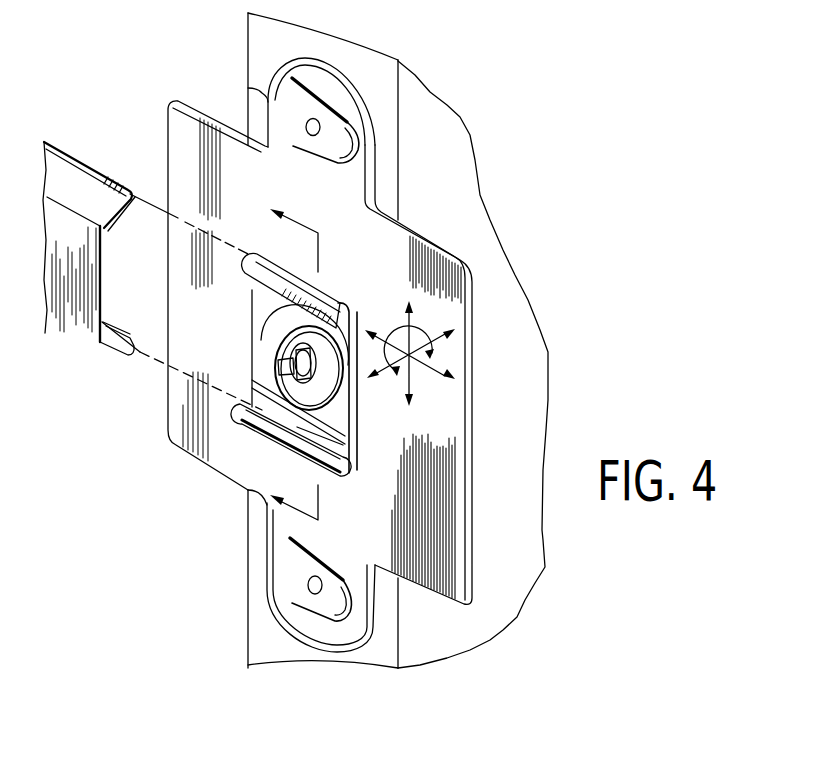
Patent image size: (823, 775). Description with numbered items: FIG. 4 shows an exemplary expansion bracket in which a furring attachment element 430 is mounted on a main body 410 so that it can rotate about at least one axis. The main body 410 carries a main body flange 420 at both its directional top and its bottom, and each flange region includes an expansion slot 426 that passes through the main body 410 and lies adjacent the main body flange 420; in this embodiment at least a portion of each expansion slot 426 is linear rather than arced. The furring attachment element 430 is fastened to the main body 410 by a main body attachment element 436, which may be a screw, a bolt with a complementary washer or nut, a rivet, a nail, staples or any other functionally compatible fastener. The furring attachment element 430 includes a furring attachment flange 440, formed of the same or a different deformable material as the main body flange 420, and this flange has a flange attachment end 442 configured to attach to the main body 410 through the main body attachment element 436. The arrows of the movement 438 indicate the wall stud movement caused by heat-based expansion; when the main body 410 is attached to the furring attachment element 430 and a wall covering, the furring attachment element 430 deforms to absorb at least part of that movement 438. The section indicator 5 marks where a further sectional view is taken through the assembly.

The main body 410 is at (455, 557).
The main body flange 420 is at (248, 88).
The expansion slot 426 is at (352, 158).
The furring attachment element 430 is at (356, 473).
The main body attachment element 436 is at (294, 351).
The movement 438 is at (440, 367).
The furring attachment flange 440 is at (320, 318).
The flange attachment end 442 is at (247, 285).
The section line for FIG. 5 is at (301, 373).